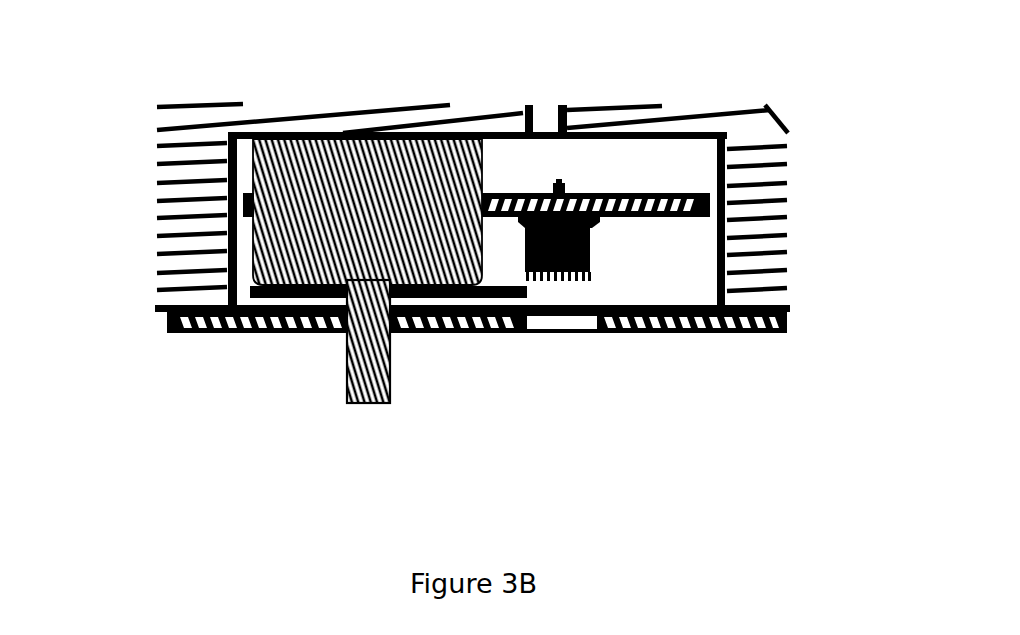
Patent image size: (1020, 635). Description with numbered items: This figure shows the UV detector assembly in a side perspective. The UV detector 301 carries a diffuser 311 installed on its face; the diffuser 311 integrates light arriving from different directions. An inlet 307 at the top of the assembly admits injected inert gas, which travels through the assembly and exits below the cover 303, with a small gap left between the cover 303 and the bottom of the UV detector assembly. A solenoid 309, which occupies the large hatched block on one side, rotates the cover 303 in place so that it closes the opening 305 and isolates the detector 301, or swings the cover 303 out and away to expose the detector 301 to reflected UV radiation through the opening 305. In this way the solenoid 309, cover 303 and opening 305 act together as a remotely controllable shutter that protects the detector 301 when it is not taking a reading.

The UV detector 301 is at (590, 242).
The cover 303 is at (315, 298).
The opening 305 is at (555, 333).
The inlet 307 is at (542, 115).
The solenoid 309 is at (250, 230).
The diffuser 311 is at (592, 278).